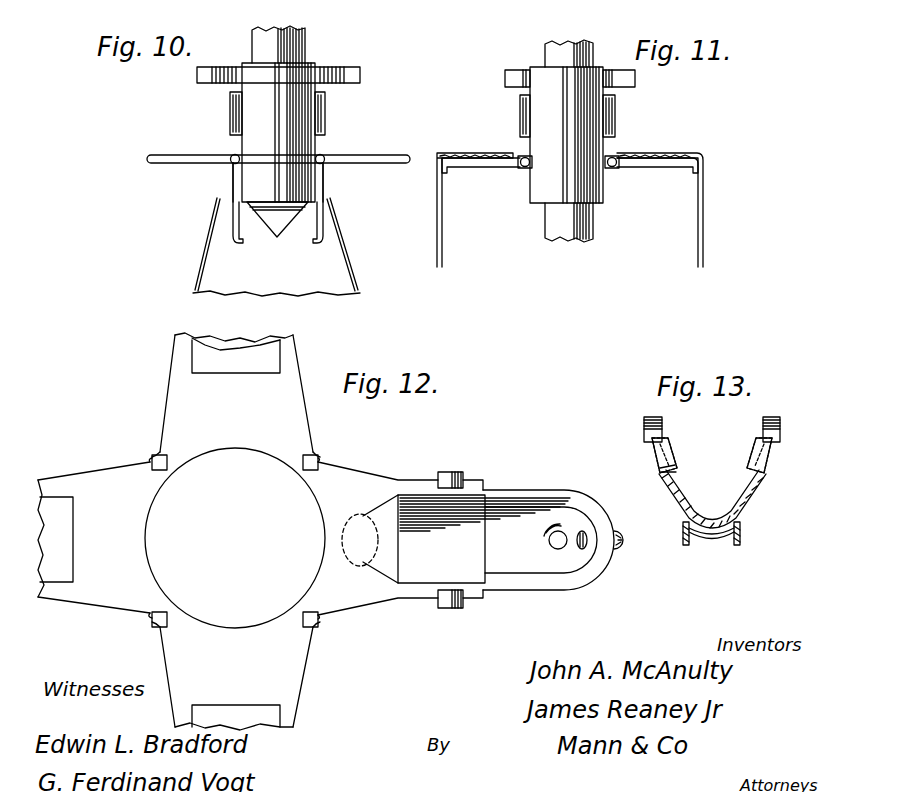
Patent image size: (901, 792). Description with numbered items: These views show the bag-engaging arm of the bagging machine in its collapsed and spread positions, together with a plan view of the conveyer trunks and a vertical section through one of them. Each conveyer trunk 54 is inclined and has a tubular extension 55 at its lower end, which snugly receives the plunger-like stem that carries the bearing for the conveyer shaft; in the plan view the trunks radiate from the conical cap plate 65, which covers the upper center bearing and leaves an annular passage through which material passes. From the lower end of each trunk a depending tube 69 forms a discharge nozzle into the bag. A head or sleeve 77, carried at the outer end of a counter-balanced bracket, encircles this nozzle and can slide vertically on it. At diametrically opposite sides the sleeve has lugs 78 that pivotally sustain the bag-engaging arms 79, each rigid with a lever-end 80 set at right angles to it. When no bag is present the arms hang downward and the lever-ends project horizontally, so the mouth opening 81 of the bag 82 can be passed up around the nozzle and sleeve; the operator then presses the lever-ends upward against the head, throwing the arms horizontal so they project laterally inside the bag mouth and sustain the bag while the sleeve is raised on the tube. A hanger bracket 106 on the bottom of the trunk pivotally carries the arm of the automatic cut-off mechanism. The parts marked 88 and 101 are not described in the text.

In FIG. 12, the conveyer trunk 54 is at (478, 540).
In FIG. 13, the conveyer trunk 54 is at (712, 483).
In FIG. 12, the tubular extension 55 is at (622, 546).
In FIG. 12, the conical cap plate 65 is at (260, 531).
In FIG. 10, the depending tube 69 is at (310, 38).
In FIG. 11, the depending tube 69 is at (548, 229).
In FIG. 10, the head or sleeve 77 is at (277, 132).
In FIG. 11, the head or sleeve 77 is at (567, 135).
In FIG. 10, the lug 78 is at (232, 155).
In FIG. 10, the bag-engaging arm 79 is at (240, 244).
In FIG. 11, the bag-engaging arm 79 is at (667, 163).
In FIG. 10, the lever-end 80 is at (174, 163).
In FIG. 11, the lever-end 80 is at (607, 144).
In FIG. 10, the mouth opening 81 is at (326, 197).
In FIG. 11, the mouth opening 81 is at (520, 156).
In FIG. 10, the bag 82 is at (360, 268).
In FIG. 10, the handle bar 88 is at (197, 73).
In FIG. 11, the handle bar 88 is at (505, 73).
In FIG. 12, the lug 101 is at (448, 475).
In FIG. 13, the lug 101 is at (645, 422).
In FIG. 13, the hanger bracket 106 is at (688, 546).